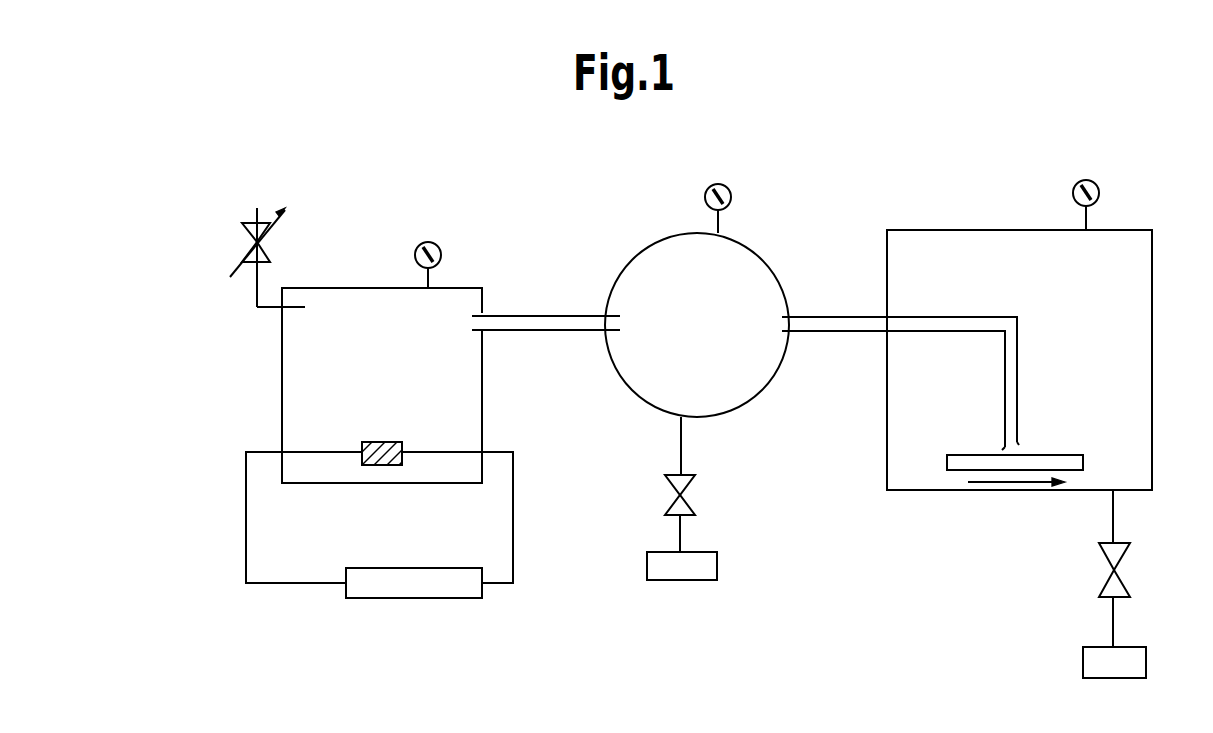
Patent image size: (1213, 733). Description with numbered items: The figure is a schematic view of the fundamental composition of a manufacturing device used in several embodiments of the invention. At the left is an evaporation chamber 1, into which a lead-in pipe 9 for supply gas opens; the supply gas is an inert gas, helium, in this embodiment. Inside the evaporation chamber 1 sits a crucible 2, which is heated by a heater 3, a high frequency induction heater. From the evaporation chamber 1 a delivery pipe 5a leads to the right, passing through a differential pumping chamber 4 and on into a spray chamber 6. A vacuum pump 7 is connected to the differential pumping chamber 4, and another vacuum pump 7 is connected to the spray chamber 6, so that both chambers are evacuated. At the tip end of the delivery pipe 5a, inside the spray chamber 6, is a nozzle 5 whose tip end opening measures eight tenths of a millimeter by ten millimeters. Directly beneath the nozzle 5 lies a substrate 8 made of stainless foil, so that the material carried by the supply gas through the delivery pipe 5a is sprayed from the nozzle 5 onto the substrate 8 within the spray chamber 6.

The evaporation chamber 1 is at (466, 296).
The crucible 2 is at (403, 443).
The heater 3 is at (375, 580).
The differential pumping chamber 4 is at (743, 382).
The nozzle 5 is at (1013, 448).
The delivery pipe 5a is at (553, 325).
The spray chamber 6 is at (1133, 275).
The vacuum pump 7 is at (662, 565).
The substrate 8 is at (957, 465).
The lead-in pipe 9 is at (255, 292).